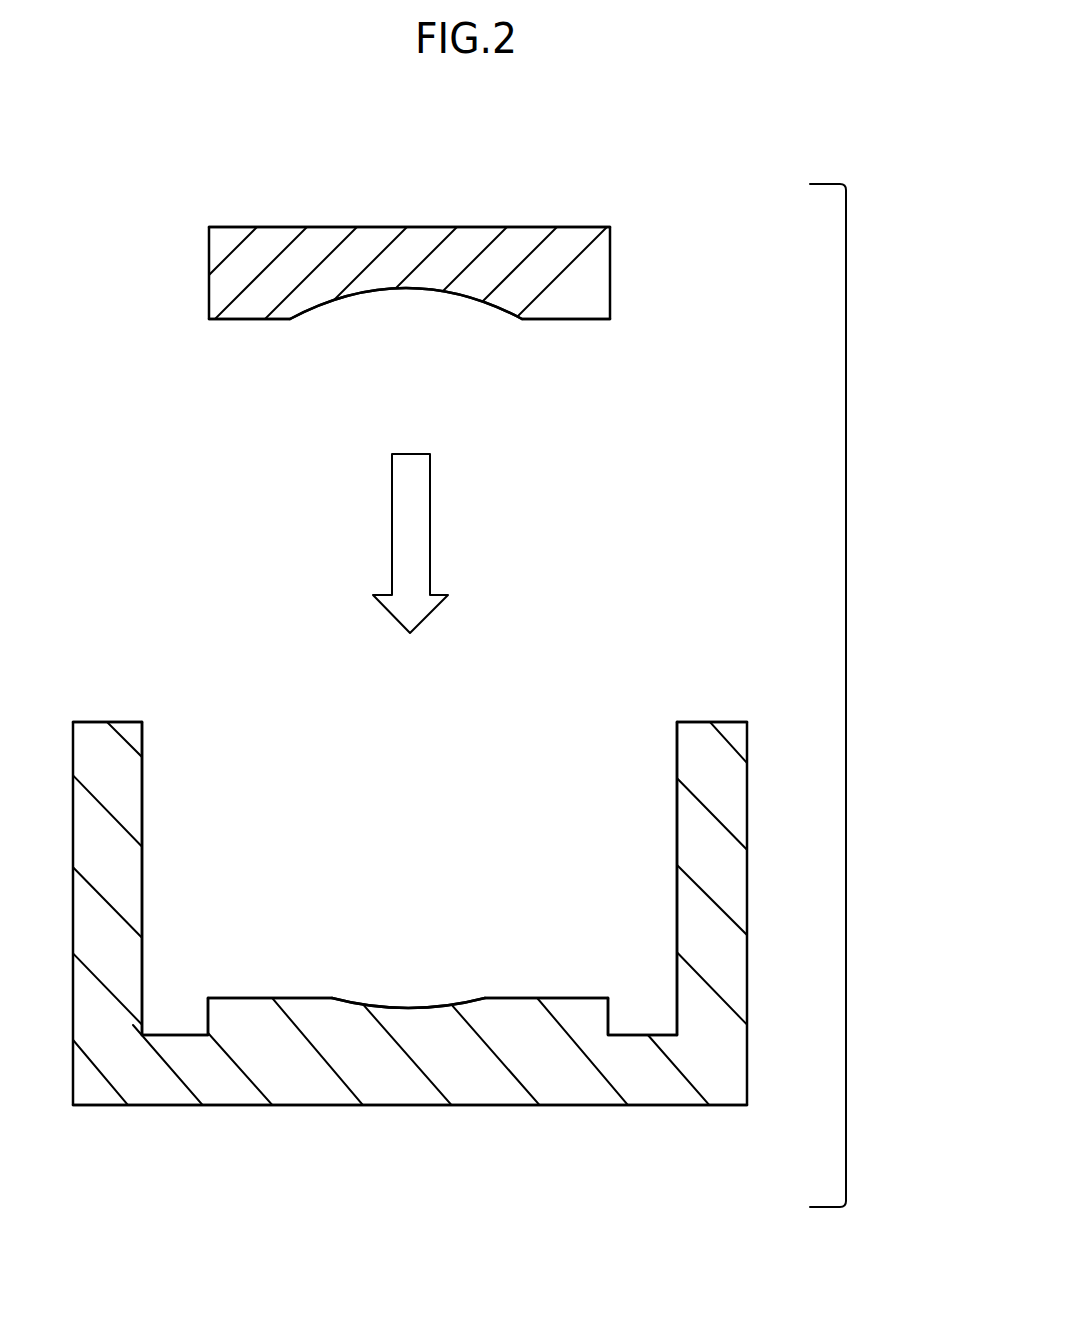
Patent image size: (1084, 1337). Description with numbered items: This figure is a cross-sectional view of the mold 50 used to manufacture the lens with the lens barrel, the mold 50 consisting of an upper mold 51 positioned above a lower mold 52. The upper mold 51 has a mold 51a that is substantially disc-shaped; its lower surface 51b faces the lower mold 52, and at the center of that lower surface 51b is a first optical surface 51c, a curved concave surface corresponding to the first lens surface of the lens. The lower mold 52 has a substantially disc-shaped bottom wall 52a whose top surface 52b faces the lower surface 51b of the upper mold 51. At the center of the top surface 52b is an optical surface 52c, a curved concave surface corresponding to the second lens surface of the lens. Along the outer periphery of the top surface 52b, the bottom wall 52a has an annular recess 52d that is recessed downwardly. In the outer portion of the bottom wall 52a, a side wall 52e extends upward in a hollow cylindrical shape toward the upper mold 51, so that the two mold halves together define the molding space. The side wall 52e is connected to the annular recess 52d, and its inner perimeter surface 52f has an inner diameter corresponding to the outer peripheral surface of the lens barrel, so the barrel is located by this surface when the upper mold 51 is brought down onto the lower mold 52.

The mold 50 is at (846, 695).
The upper mold 51 is at (643, 290).
The mold 51a is at (467, 245).
The lower surface 51b is at (250, 322).
The first optical surface 51c is at (430, 292).
The lower mold 52 is at (727, 1122).
The bottom wall 52a is at (400, 1080).
The top surface 52b is at (248, 997).
The optical surface 52c is at (408, 1007).
The annular recess 52d is at (175, 1033).
The side wall 52e is at (105, 753).
The inner perimeter surface 52f is at (142, 800).